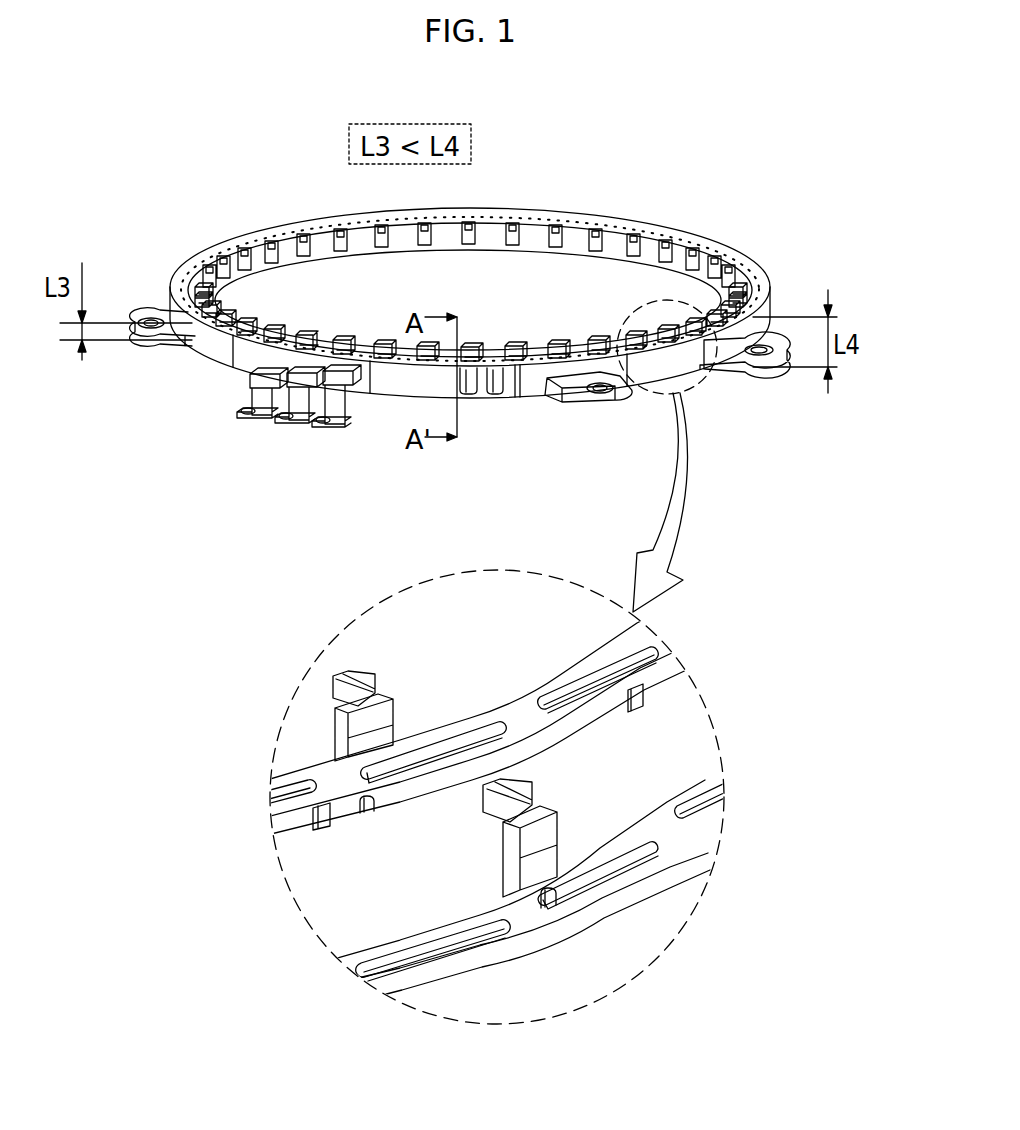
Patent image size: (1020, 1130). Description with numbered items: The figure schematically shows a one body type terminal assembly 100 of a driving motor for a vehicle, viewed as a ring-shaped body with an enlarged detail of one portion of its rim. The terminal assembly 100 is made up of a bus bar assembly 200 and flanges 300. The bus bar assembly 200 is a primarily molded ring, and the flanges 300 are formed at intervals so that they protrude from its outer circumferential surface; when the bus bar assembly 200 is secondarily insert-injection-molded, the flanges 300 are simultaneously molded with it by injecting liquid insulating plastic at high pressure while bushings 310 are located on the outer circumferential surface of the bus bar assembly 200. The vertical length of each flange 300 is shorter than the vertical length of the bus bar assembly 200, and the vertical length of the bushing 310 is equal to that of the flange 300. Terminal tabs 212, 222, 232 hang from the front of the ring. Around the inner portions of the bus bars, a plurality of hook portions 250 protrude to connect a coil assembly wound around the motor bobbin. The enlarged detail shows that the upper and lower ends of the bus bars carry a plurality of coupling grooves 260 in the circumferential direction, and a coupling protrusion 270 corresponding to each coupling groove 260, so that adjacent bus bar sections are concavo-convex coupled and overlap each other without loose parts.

The terminal assembly 100 is at (265, 209).
The bus bar assembly 200 is at (208, 251).
The first terminal 212 is at (240, 406).
The second terminal 222 is at (283, 420).
The third terminal 232 is at (332, 424).
The hook portion 250 is at (330, 688).
The coupling groove 260 is at (605, 668).
The coupling protrusion 270 is at (443, 733).
The flange 300 is at (150, 309).
The bushing 310 is at (598, 380).